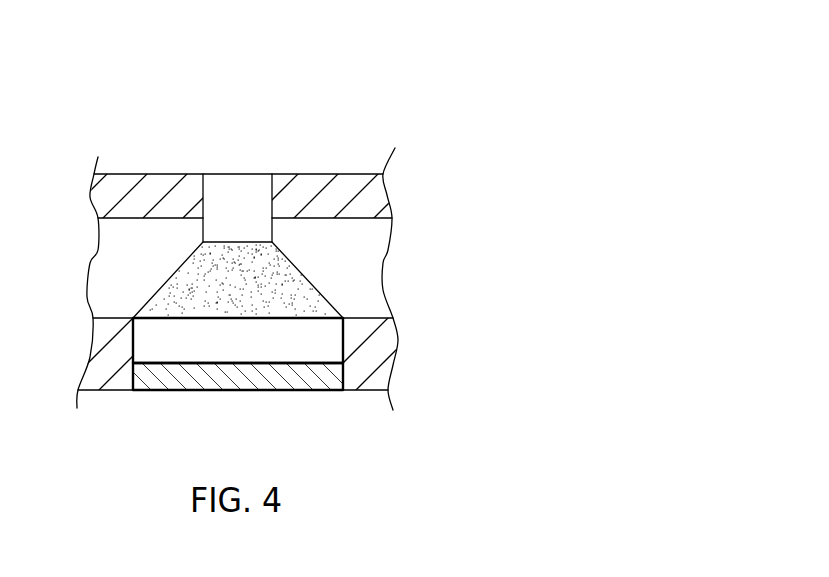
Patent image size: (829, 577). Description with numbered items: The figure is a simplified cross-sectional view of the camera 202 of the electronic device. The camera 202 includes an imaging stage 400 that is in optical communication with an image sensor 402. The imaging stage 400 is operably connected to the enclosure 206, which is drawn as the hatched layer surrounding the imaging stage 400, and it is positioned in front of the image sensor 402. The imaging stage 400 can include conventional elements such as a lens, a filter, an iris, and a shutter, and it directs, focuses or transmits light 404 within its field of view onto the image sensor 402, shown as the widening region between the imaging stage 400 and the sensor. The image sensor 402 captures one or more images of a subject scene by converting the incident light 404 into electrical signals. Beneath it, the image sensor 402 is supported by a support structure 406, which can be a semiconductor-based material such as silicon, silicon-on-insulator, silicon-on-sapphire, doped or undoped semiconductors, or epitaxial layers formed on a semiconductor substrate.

The camera 202 is at (346, 149).
The enclosure 206 is at (373, 193).
The imaging stage 400 is at (232, 188).
The image sensor 402 is at (328, 353).
The light 404 is at (318, 292).
The support structure 406 is at (160, 384).